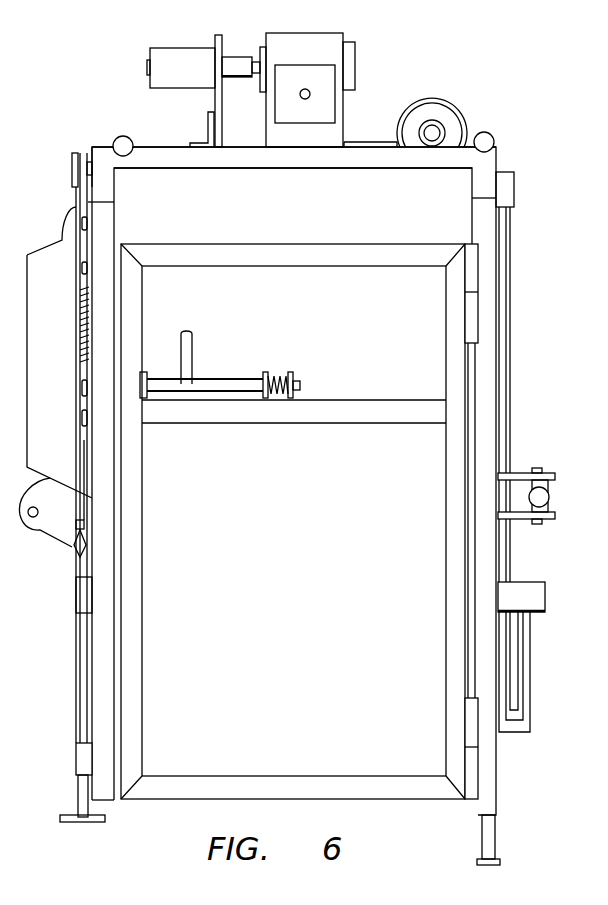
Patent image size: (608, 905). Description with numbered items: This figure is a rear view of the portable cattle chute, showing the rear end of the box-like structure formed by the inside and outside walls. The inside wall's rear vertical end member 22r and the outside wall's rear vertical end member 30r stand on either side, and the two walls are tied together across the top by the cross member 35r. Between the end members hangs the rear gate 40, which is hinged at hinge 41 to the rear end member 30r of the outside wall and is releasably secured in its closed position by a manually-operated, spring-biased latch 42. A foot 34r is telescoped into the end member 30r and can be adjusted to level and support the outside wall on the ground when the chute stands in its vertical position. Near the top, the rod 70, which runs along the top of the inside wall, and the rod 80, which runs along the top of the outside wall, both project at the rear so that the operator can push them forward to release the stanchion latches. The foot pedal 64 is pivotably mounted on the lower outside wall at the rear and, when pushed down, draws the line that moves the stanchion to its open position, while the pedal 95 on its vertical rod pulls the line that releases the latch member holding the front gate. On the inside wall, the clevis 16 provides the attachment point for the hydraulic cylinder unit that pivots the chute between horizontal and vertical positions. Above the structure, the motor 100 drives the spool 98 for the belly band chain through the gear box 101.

The clevis 16 is at (50, 532).
The rear vertical end member of inside wall 22r is at (98, 662).
The rear vertical end member of outside wall 30r is at (490, 418).
The foot 34r is at (495, 837).
The cross member 35r is at (377, 162).
The rear gate 40 is at (275, 239).
The hinge 41 is at (472, 308).
The latch 42 is at (218, 382).
The foot pedal 64 is at (537, 595).
The rod 70 is at (121, 136).
The rod 80 is at (486, 132).
The pedal 95 is at (60, 817).
The spool 98 is at (444, 100).
The motor 100 is at (170, 52).
The gear box 101 is at (326, 33).